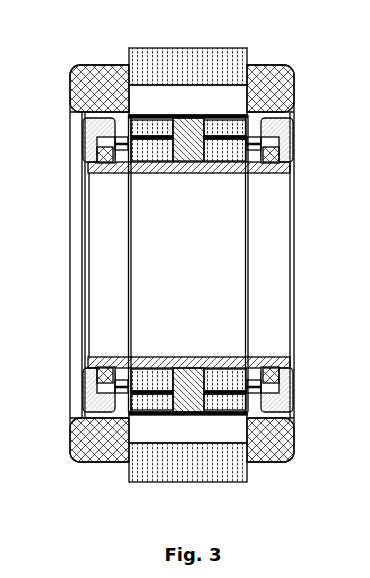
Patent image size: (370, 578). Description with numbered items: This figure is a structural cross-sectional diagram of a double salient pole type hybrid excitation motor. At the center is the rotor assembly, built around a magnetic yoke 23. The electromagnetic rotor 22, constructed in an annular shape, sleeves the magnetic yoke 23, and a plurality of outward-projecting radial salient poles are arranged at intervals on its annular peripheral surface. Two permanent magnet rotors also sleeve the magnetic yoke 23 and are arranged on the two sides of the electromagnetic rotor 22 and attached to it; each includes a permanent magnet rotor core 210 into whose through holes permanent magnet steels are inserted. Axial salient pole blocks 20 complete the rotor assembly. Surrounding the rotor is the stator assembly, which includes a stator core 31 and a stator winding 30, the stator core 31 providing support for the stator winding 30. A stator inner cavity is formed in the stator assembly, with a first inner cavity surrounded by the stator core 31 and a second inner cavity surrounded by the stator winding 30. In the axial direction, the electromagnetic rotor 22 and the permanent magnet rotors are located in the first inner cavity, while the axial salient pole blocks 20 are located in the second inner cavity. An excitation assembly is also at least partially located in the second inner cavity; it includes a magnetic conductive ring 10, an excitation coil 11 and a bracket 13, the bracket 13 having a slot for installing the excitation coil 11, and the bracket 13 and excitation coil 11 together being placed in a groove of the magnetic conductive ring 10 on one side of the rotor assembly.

The magnetic conductive ring 10 is at (88, 370).
The excitation coil 11 is at (88, 140).
The bracket 13 is at (97, 158).
The axial salient pole block 20 is at (120, 387).
The electromagnetic rotor 22 is at (193, 377).
The magnetic yoke 23 is at (142, 173).
The stator winding 30 is at (278, 78).
The stator core 31 is at (195, 58).
The permanent magnet rotor core 210 is at (142, 380).